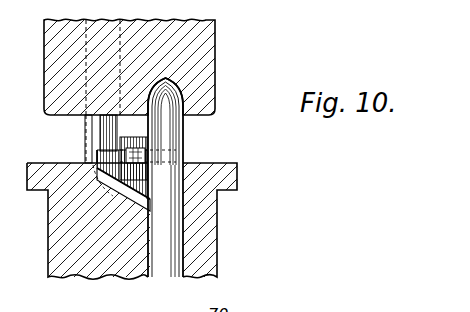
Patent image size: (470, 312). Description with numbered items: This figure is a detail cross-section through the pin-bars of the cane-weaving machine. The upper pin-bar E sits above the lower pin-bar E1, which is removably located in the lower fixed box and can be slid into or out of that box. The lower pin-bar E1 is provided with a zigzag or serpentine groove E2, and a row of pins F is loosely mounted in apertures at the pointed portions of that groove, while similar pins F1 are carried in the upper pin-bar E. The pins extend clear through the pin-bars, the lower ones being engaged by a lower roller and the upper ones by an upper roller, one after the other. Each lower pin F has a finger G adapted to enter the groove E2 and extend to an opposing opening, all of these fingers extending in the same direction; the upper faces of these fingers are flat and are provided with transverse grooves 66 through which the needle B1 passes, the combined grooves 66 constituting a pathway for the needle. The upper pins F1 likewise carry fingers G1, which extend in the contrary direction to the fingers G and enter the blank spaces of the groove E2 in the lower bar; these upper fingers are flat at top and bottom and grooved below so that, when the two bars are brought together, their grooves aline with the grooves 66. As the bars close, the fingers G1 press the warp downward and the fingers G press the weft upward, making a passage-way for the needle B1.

The upper pin-bar E is at (215, 80).
The pin-bar E1 is at (217, 222).
The zigzag or serpentine groove E2 is at (140, 200).
The pins F is at (183, 139).
The pins F1 is at (115, 85).
The fingers G is at (102, 172).
The fingers G1 is at (131, 137).
The needle B1 is at (145, 157).
The transverse grooves 66 is at (117, 147).